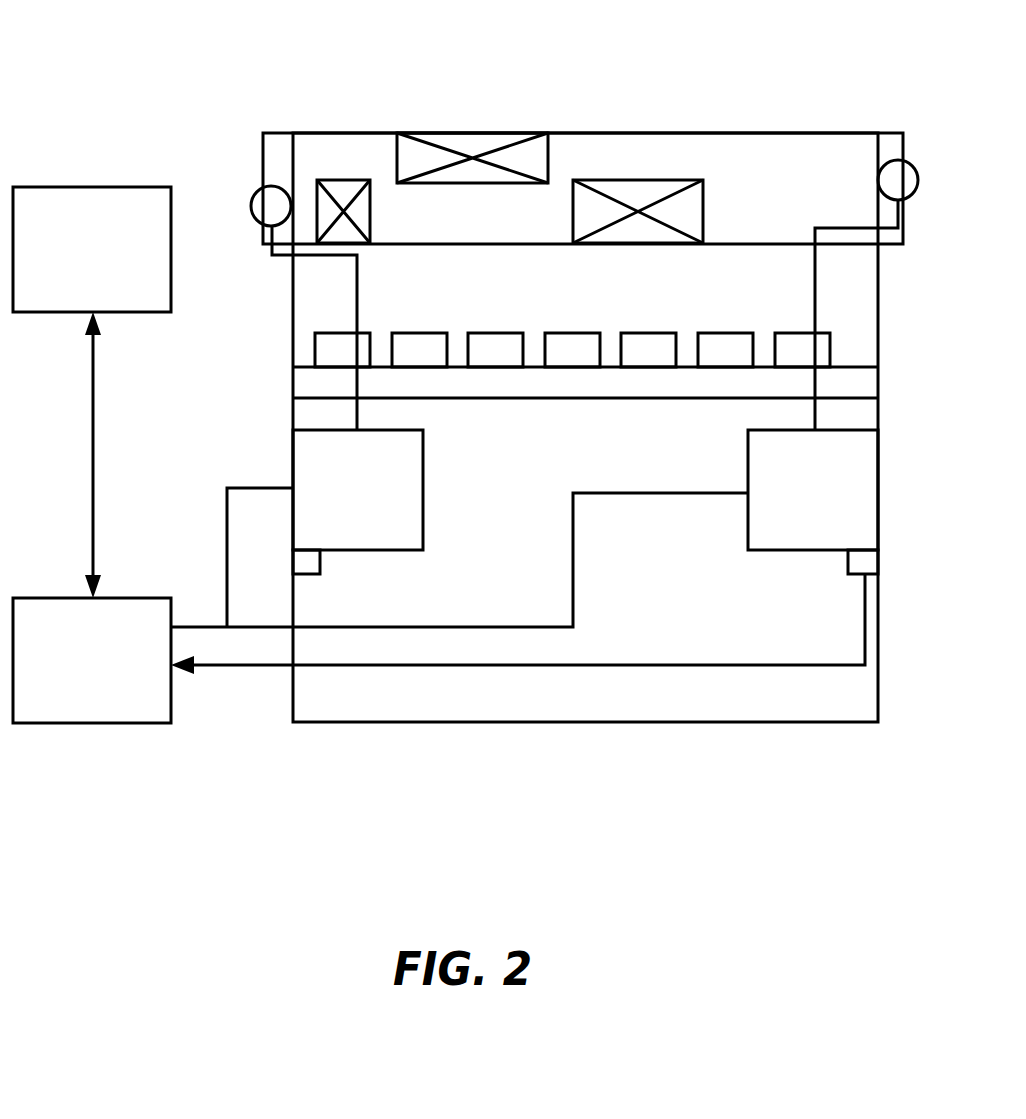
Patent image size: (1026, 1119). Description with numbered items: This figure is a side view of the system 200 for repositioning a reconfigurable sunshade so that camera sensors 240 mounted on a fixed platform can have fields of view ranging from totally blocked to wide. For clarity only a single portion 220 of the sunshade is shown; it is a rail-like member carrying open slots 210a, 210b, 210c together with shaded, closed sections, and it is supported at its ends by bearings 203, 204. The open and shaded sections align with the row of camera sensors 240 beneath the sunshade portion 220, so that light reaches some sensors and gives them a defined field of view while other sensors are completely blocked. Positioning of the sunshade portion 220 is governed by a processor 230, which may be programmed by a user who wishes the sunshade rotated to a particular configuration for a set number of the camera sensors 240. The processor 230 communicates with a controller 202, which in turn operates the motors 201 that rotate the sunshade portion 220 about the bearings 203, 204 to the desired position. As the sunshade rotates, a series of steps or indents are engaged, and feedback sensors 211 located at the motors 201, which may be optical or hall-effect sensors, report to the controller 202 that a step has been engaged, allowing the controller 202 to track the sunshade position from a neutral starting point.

The system 200 is at (522, 752).
The sunshade portion 220 is at (765, 133).
The bearing 203 is at (253, 193).
The bearing 204 is at (918, 168).
The open slot 210a is at (343, 186).
The open slot 210b is at (481, 141).
The open slot 210c is at (648, 187).
The camera sensors 240 is at (367, 333).
The motor 201 is at (839, 524).
The feedback sensors 211 is at (320, 560).
The processor 230 is at (111, 291).
The controller 202 is at (110, 701).